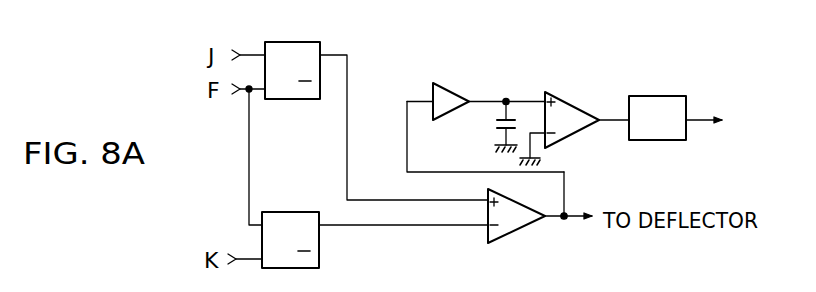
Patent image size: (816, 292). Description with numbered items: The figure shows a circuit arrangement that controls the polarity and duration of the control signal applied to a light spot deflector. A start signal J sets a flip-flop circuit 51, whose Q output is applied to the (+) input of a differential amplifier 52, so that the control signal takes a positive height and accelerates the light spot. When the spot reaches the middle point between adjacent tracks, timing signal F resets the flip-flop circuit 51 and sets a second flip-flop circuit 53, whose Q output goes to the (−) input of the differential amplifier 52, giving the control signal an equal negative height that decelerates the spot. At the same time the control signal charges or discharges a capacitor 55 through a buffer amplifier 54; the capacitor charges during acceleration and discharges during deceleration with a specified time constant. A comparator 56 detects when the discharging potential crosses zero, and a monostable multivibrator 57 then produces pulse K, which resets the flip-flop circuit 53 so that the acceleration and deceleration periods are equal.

The flip-flop circuit 51 is at (300, 42).
The differential amplifier 52 is at (514, 196).
The flip-flop circuit 53 is at (285, 212).
The buffer amplifier 54 is at (441, 83).
The capacitor 55 is at (497, 120).
The comparator 56 is at (562, 100).
The monostable multivibrator 57 is at (654, 96).